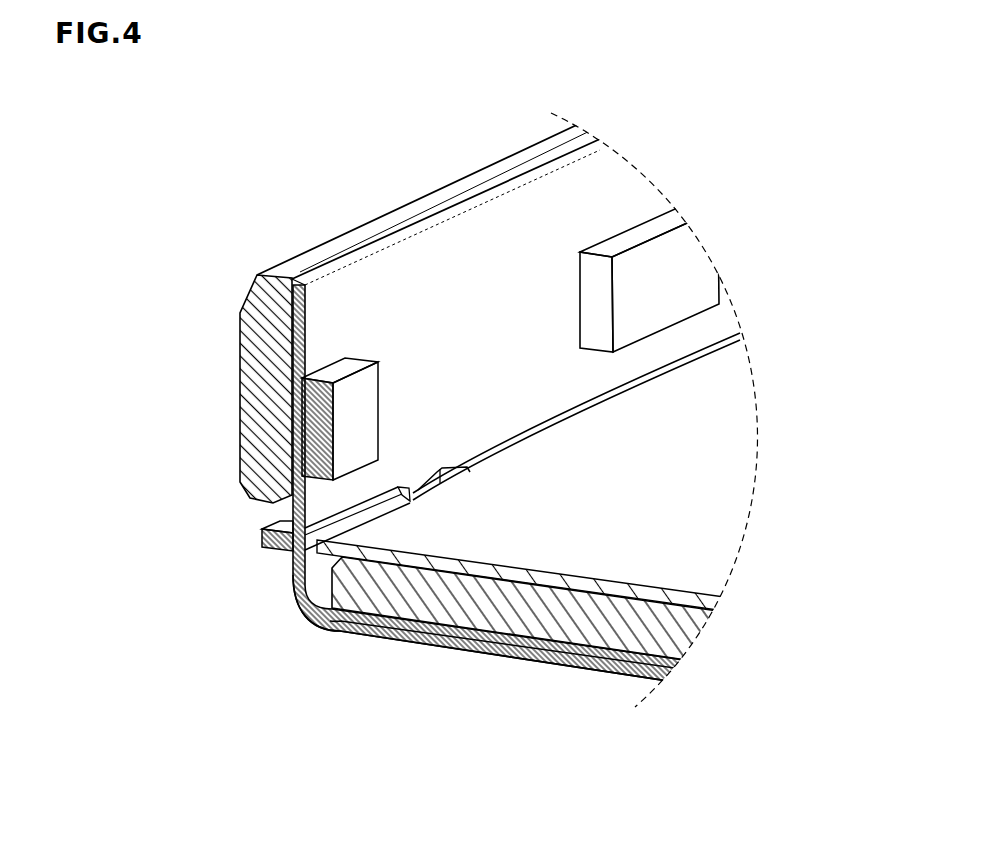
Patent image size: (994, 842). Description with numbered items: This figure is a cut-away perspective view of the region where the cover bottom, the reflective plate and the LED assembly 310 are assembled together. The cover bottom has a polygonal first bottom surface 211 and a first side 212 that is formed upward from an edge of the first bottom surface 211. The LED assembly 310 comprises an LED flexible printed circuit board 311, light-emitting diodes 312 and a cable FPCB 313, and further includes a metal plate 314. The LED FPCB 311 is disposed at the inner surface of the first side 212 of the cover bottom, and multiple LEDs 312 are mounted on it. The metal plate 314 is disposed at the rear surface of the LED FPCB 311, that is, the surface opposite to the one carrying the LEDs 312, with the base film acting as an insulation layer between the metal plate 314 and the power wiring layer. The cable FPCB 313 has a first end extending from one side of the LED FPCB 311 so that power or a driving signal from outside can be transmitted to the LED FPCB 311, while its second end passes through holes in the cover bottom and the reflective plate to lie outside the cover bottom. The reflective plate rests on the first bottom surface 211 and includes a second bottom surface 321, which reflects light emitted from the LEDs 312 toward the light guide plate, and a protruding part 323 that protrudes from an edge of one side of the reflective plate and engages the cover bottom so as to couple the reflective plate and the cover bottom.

The first bottom surface 211 is at (483, 658).
The first side 212 is at (238, 341).
The LED assembly 310 is at (440, 446).
The LED flexible printed circuit board 311 is at (420, 438).
The light-emitting diode 312 is at (318, 434).
The cable FPCB 313 is at (317, 647).
The metal plate 314 is at (292, 400).
The second bottom surface 321 is at (645, 570).
The protruding part 323 is at (485, 450).